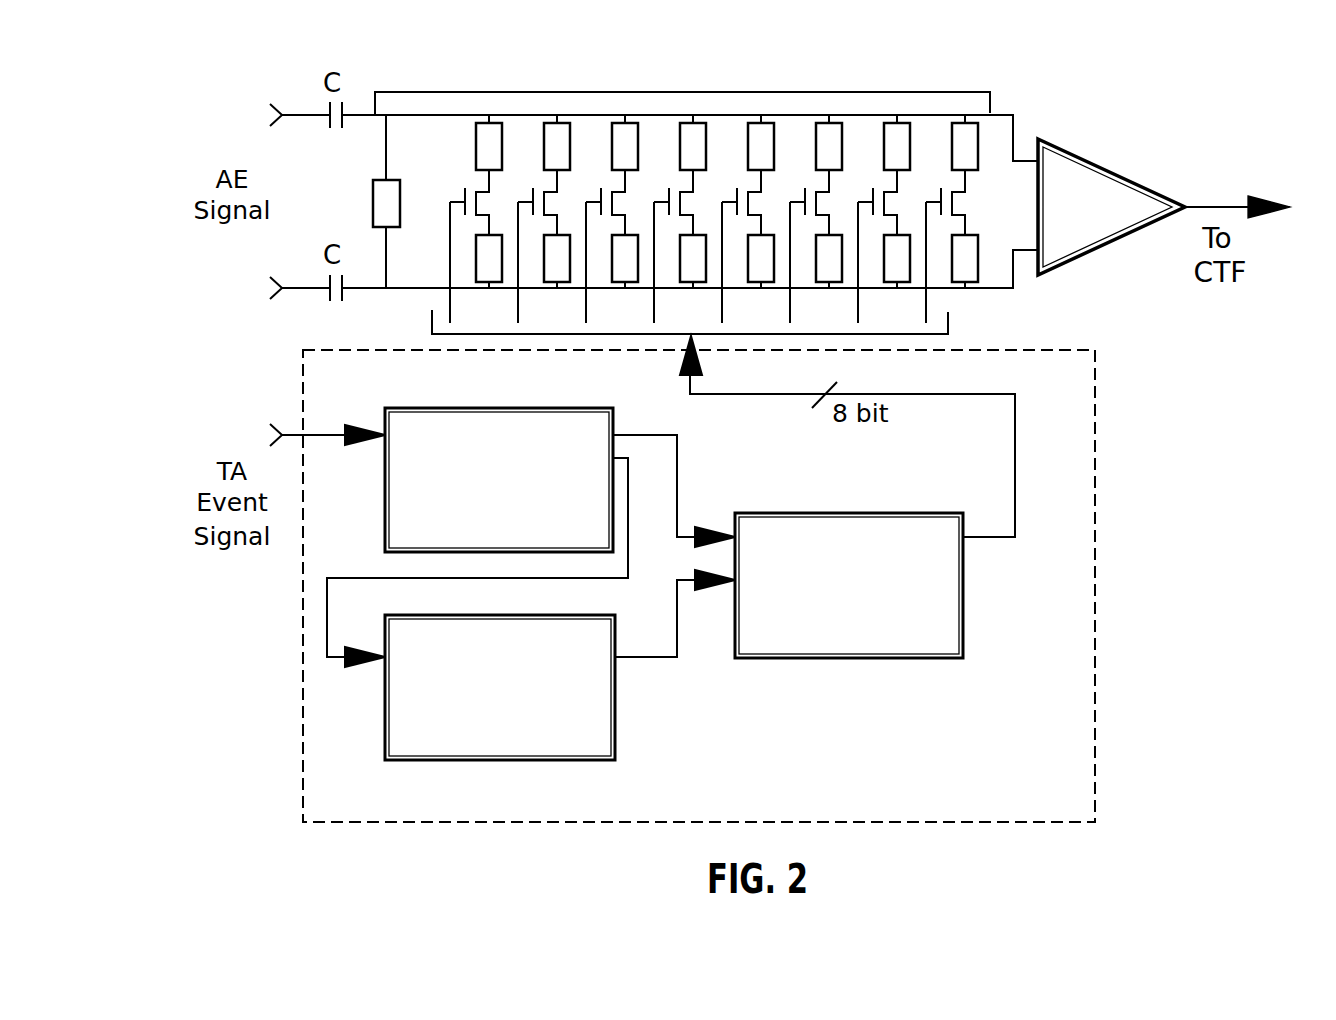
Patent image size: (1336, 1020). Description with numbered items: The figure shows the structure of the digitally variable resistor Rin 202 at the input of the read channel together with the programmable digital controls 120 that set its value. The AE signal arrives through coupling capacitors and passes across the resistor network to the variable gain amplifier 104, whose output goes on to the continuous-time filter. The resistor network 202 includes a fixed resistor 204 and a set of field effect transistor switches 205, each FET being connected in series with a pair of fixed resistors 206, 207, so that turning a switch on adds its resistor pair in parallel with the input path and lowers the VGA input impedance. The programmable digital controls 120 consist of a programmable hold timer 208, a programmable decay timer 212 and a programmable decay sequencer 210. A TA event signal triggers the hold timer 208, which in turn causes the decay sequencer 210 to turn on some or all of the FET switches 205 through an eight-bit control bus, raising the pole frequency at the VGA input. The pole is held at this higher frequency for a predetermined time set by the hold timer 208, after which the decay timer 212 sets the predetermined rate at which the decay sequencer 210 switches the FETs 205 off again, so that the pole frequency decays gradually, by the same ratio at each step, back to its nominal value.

The variable gain amplifier 104 is at (1115, 170).
The programmable digital controls 120 is at (1097, 380).
The digitally variable resistor 202 is at (727, 181).
The fixed resistors 204 is at (396, 180).
The field effect transistor switches 205 is at (947, 187).
The fixed resistor 206 is at (980, 130).
The fixed resistor 207 is at (982, 233).
The programmable hold timer 208 is at (481, 408).
The decay sequencer 210 is at (965, 642).
The decay timer 212 is at (502, 760).